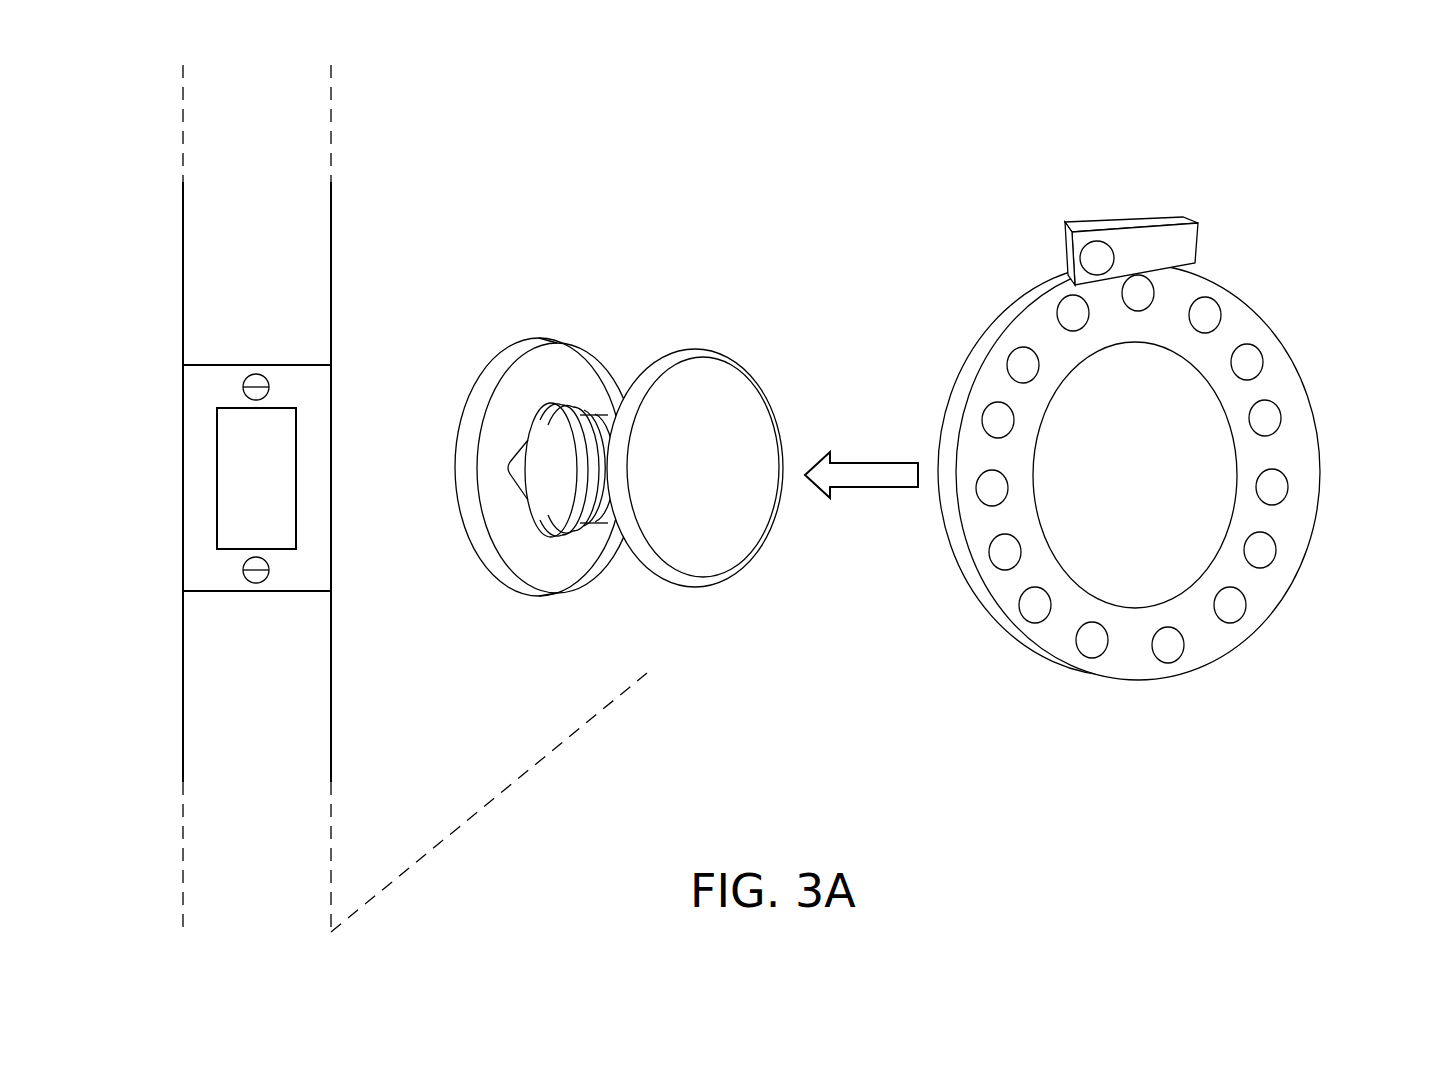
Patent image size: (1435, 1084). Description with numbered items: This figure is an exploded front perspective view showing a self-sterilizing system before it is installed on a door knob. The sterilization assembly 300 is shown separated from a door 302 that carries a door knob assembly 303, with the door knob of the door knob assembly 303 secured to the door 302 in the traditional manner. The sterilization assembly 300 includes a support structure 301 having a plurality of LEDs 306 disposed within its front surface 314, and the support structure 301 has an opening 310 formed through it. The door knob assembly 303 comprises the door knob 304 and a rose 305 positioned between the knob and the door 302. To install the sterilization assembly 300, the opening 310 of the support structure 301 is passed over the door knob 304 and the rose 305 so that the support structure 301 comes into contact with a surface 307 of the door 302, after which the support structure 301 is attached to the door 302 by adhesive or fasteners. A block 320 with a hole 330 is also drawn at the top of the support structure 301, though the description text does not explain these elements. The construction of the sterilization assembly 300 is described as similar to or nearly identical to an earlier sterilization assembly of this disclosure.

The sterilization assembly 300 is at (1183, 454).
The support structure 301 is at (1317, 468).
The door 302 is at (243, 249).
The door knob assembly 303 is at (695, 449).
The door knob 304 is at (728, 482).
The rose 305 is at (553, 340).
The LEDs 306 is at (1245, 542).
The surface 307 is at (412, 440).
The opening 310 is at (1160, 550).
The front surface 314 is at (1207, 637).
The locking block 320 is at (1080, 238).
The block hole 330 is at (1072, 253).